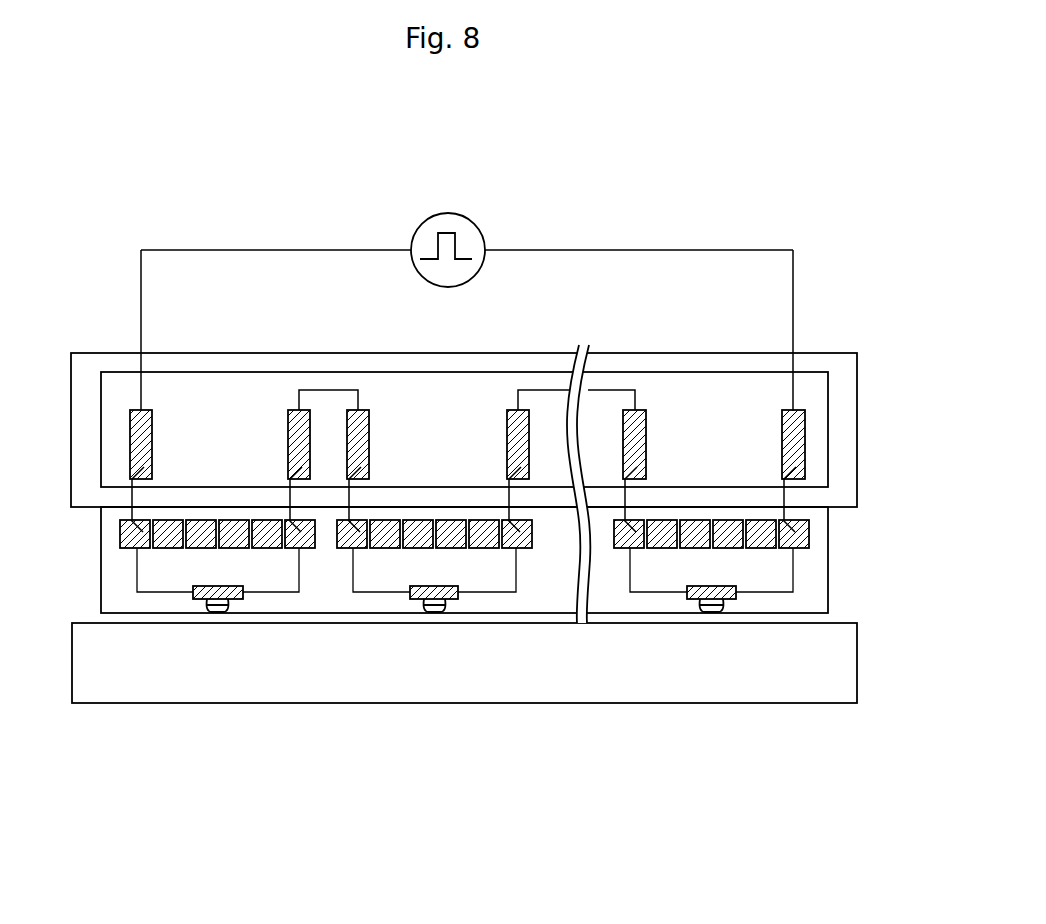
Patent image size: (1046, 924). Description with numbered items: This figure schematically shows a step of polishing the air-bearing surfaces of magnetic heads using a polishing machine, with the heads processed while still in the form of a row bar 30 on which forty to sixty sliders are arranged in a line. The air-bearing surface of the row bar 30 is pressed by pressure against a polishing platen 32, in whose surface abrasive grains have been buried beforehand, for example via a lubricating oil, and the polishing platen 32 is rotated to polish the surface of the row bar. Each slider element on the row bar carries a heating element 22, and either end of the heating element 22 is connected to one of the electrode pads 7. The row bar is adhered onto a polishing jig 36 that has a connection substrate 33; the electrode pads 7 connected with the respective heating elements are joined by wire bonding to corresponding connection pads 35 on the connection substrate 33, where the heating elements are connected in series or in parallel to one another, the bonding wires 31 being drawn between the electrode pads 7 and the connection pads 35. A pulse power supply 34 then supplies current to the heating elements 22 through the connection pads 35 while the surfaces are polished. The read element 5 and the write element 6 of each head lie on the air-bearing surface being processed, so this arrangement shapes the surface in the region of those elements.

The read element 5 is at (465, 676).
The write element 6 is at (441, 612).
The electrode pads 7 is at (808, 533).
The heating element 22 is at (405, 597).
The row bar 30 is at (812, 585).
The connection wiring 31 is at (788, 497).
The polishing platen 32 is at (238, 689).
The connection substrate 33 is at (817, 383).
The pulse power supply 34 is at (452, 213).
The connection pads 35 is at (797, 437).
The polishing jig 36 is at (83, 367).